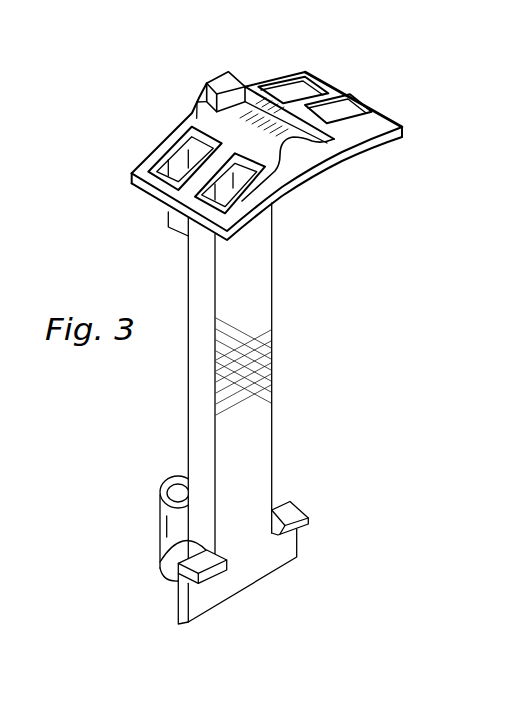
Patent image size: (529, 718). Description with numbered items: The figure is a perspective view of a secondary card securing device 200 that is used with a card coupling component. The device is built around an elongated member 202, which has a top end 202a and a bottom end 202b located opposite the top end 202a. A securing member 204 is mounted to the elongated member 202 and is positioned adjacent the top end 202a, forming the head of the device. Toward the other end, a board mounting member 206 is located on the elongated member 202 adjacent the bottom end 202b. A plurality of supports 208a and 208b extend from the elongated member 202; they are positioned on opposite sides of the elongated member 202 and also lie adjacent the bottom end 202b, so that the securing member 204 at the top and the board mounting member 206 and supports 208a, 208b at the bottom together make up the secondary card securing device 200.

The secondary card securing device 200 is at (410, 212).
The elongated member 202 is at (258, 262).
The top end 202a is at (219, 81).
The bottom end 202b is at (240, 592).
The securing member 204 is at (302, 152).
The board mounting member 206 is at (160, 513).
The support 208a is at (178, 560).
The support 208b is at (292, 515).